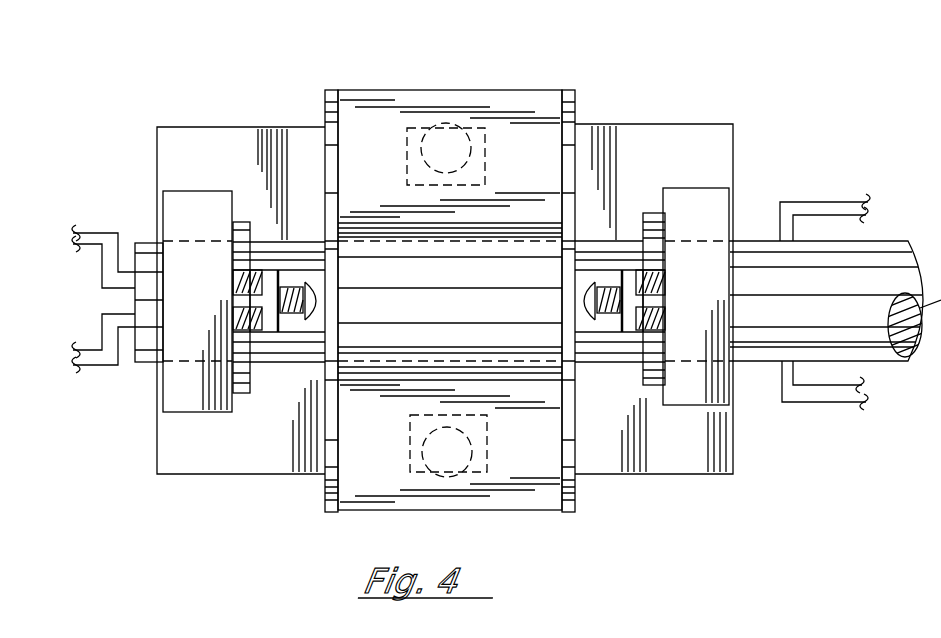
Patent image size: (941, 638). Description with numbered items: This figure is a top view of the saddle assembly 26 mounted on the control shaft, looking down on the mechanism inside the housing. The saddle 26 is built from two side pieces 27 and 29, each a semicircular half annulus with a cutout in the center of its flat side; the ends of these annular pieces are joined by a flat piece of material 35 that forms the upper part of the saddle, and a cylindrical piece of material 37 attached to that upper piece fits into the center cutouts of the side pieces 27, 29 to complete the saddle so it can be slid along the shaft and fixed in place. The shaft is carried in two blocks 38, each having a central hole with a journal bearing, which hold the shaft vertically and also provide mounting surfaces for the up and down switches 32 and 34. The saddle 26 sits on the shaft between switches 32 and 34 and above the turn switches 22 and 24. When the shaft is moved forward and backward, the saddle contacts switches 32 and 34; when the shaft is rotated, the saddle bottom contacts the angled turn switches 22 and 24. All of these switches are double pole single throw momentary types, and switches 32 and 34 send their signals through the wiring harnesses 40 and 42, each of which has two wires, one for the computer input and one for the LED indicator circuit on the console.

The turn switch 22 is at (454, 460).
The turn switch 24 is at (440, 135).
The saddle assembly 26 is at (576, 93).
The side piece 27 is at (576, 158).
The side piece 29 is at (324, 105).
The up/down switch 32 is at (272, 332).
The up/down switch 34 is at (622, 333).
The flat piece of material 35 is at (372, 100).
The cylindrical piece of material 37 is at (473, 317).
The block 38 is at (175, 390).
The wiring harness 40 is at (89, 299).
The wiring harness 42 is at (849, 300).